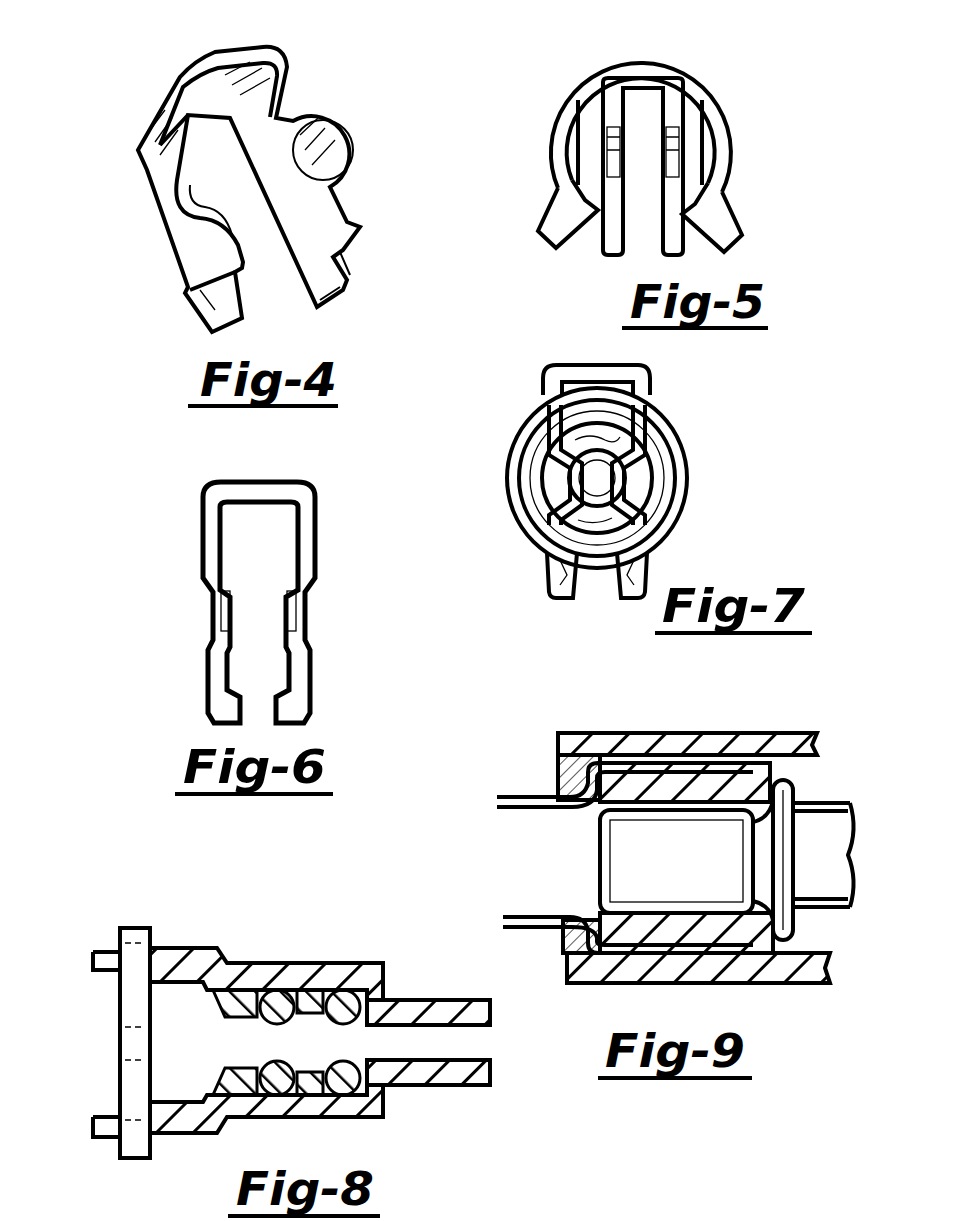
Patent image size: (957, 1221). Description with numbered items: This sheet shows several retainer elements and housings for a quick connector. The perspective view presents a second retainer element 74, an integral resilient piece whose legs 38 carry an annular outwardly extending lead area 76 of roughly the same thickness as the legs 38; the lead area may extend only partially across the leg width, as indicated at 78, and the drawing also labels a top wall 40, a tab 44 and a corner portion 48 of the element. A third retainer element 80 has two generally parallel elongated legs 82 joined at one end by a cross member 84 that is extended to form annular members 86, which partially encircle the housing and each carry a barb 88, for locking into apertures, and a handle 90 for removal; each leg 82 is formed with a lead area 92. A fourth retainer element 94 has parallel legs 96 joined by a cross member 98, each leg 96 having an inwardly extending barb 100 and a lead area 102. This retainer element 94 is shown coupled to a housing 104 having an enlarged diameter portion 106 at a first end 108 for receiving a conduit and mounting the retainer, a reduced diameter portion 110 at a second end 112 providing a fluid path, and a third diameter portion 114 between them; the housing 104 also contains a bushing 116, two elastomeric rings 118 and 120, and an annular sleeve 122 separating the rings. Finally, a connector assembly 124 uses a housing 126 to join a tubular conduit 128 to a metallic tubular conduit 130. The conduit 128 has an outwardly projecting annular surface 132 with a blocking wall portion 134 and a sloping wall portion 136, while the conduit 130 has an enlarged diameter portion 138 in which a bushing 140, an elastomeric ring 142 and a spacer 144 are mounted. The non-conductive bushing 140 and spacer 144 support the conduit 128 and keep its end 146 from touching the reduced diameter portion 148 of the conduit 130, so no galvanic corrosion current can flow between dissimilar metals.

In FIG. 4, the legs 38 is at (160, 158).
In FIG. 4, the top wall 40 is at (215, 50).
In FIG. 4, the tab 44 is at (195, 297).
In FIG. 4, the corner portion 48 is at (290, 108).
In FIG. 4, the retainer element 74 is at (125, 192).
In FIG. 4, the lead area 76 is at (352, 133).
In FIG. 4, the partially extending lead area 78 is at (290, 178).
In FIG. 5, the retainer element 80 is at (578, 75).
In FIG. 5, the legs 82 is at (612, 250).
In FIG. 5, the cross member 84 is at (648, 75).
In FIG. 5, the annular members 86 is at (555, 127).
In FIG. 5, the barb 88 is at (565, 175).
In FIG. 5, the handle 90 is at (545, 230).
In FIG. 5, the lead area 92 is at (683, 90).
In FIG. 7, the retainer element 94 is at (625, 362).
In FIG. 6, the retainer element 94 is at (205, 588).
In FIG. 8, the retainer element 94 is at (138, 925).
In FIG. 6, the legs 96 is at (315, 523).
In FIG. 4, the cross member 98 is at (350, 266).
In FIG. 6, the cross member 98 is at (280, 485).
In FIG. 6, the barb 100 is at (235, 695).
In FIG. 6, the lead area 102 is at (230, 610).
In FIG. 7, the housing 104 is at (505, 432).
In FIG. 8, the housing 104 is at (330, 952).
In FIG. 7, the enlarged diameter portion 106 is at (525, 457).
In FIG. 8, the enlarged diameter portion 106 is at (110, 975).
In FIG. 8, the first end 108 is at (93, 958).
In FIG. 7, the reduced diameter portion 110 is at (585, 482).
In FIG. 8, the reduced diameter portion 110 is at (450, 1055).
In FIG. 8, the second end 112 is at (490, 1012).
In FIG. 7, the third diameter portion 114 is at (575, 525).
In FIG. 8, the third diameter portion 114 is at (265, 987).
In FIG. 7, the bushing 116 is at (575, 500).
In FIG. 8, the bushing 116 is at (240, 1003).
In FIG. 8, the elastomeric ring 118 is at (270, 1068).
In FIG. 8, the elastomeric ring 120 is at (340, 1025).
In FIG. 8, the annular sleeve 122 is at (280, 987).
In FIG. 9, the connector assembly 124 is at (545, 790).
In FIG. 9, the housing 126 is at (650, 733).
In FIG. 9, the tubular conduit 128 is at (800, 803).
In FIG. 9, the metallic tubular conduit 130 is at (540, 922).
In FIG. 9, the annular surface 132 is at (775, 785).
In FIG. 9, the blocking wall portion 134 is at (795, 922).
In FIG. 9, the sloping wall portion 136 is at (765, 838).
In FIG. 9, the enlarged diameter portion 138 is at (630, 985).
In FIG. 9, the bushing 140 is at (740, 910).
In FIG. 9, the elastomeric ring 142 is at (650, 925).
In FIG. 9, the spacer 144 is at (620, 828).
In FIG. 9, the end 146 is at (600, 865).
In FIG. 9, the reduced diameter portion 148 is at (550, 812).